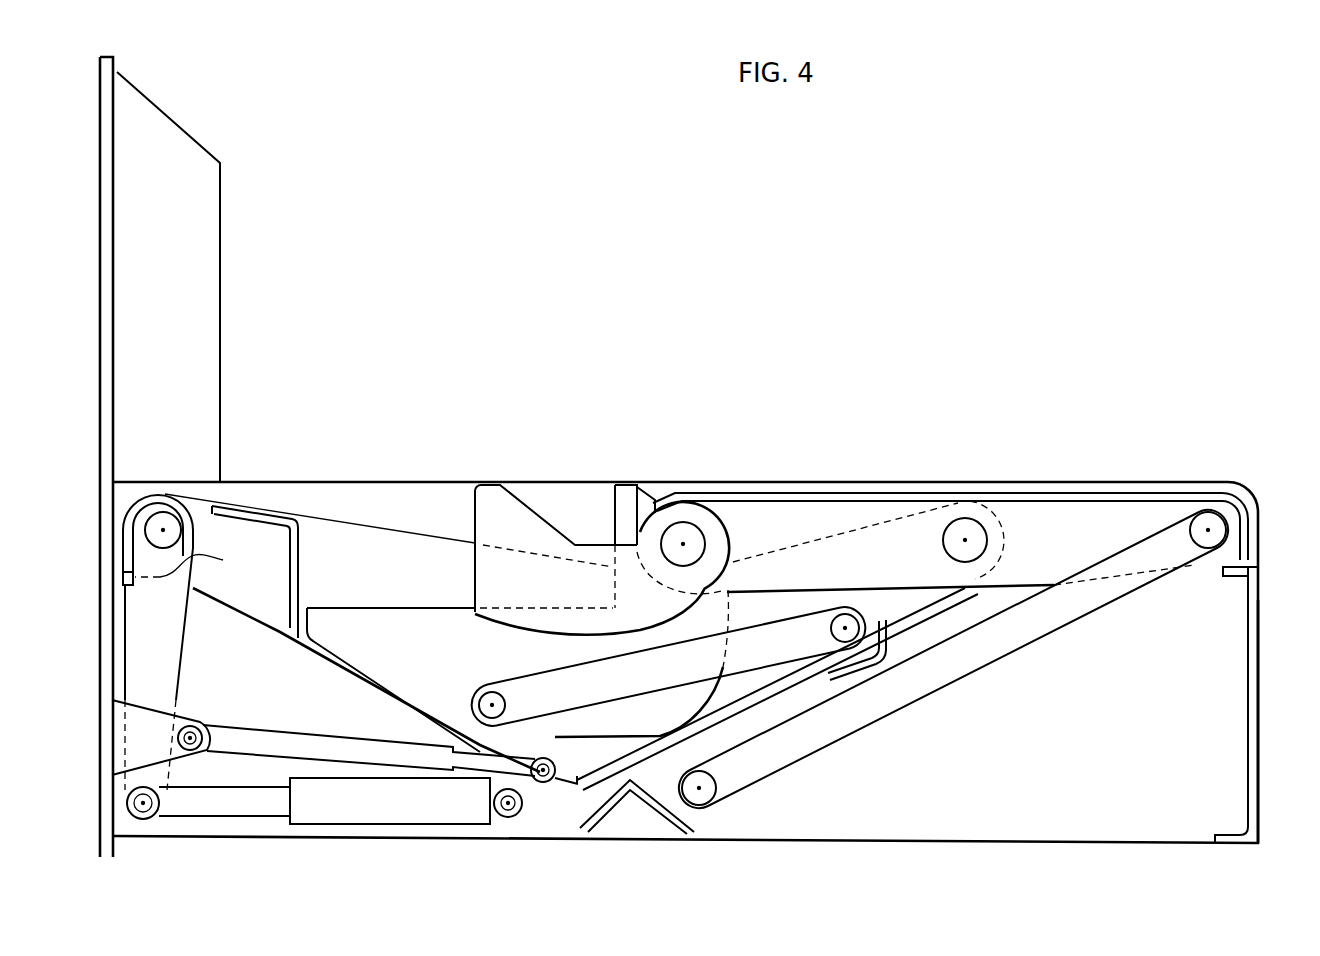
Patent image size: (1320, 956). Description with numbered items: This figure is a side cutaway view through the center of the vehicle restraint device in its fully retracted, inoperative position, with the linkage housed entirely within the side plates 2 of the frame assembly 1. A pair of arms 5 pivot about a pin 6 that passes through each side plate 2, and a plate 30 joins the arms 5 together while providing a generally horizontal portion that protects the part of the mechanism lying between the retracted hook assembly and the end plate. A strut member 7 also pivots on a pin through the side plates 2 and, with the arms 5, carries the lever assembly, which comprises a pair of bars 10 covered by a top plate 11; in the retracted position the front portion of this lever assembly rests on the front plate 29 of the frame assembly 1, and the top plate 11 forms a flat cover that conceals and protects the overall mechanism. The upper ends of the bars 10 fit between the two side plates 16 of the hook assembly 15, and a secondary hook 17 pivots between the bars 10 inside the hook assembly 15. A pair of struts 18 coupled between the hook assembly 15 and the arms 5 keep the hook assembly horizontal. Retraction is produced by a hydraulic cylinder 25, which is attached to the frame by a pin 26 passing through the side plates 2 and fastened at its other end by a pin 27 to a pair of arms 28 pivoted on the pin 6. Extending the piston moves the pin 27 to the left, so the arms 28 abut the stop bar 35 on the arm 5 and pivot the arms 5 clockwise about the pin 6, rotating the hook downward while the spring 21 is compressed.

The frame assembly 1 is at (1263, 567).
The side plates 2 is at (266, 483).
The arms 5 is at (350, 523).
The pin 6 is at (182, 527).
The strut member 7 is at (990, 668).
The bars 10 is at (890, 515).
The top plate 11 is at (953, 505).
The hook assembly 15 is at (449, 688).
The side plates of the hook assembly 16 is at (411, 607).
The secondary hook 17 is at (520, 497).
The struts 18 is at (762, 625).
The spring 21 is at (283, 735).
The hydraulic cylinder 25 is at (440, 830).
The pin 26 is at (523, 802).
The pin 27 is at (142, 815).
The arms 28 is at (177, 697).
The front plate 29 is at (1262, 710).
The plate 30 is at (299, 582).
The stop bar 35 is at (194, 563).